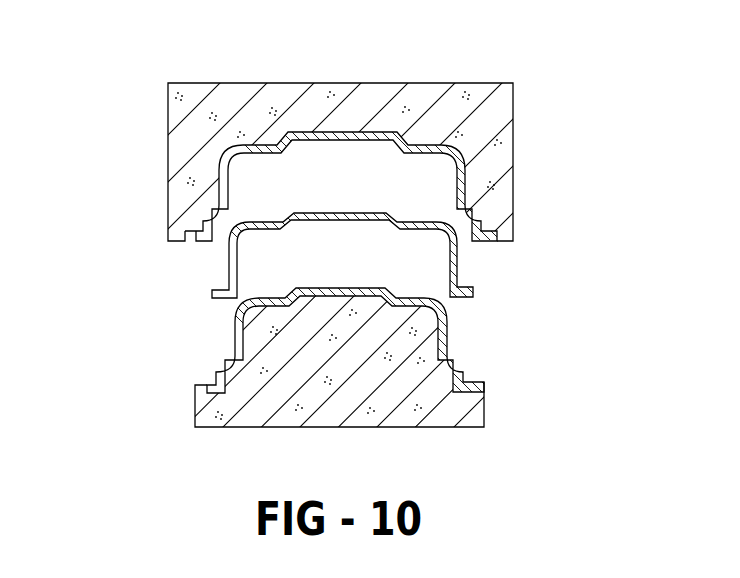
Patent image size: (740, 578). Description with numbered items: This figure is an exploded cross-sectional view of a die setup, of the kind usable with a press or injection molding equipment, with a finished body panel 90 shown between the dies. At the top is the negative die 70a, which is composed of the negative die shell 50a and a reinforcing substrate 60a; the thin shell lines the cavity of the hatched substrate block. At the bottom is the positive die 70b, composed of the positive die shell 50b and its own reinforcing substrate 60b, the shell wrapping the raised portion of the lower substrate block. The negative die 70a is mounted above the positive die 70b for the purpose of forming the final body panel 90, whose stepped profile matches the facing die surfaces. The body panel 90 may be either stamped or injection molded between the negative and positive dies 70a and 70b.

The negative die shell 50a is at (227, 152).
The reinforcing substrate 60a is at (372, 97).
The negative die 70a is at (122, 179).
The body panel 90 is at (210, 292).
The positive die 70b is at (522, 398).
The reinforcing substrate 60b is at (443, 413).
The positive die shell 50b is at (246, 372).